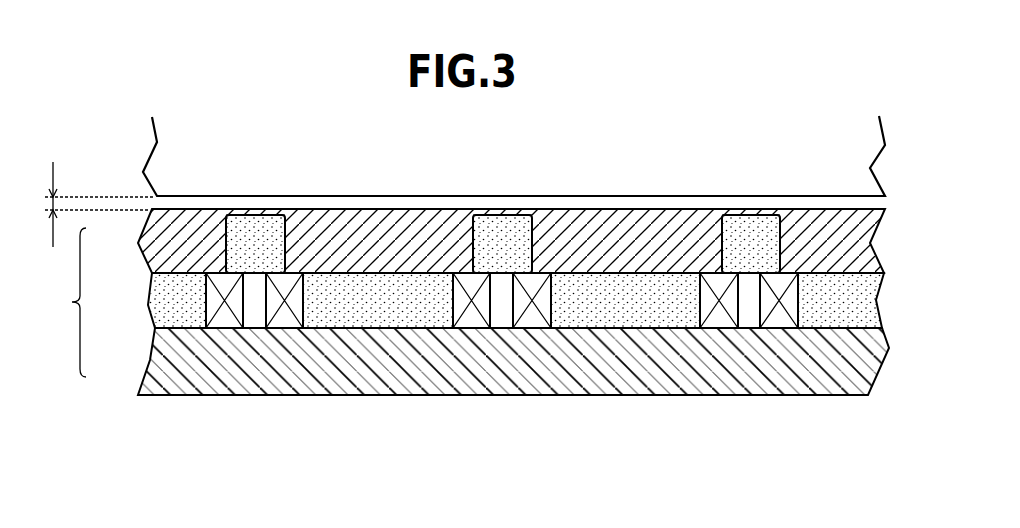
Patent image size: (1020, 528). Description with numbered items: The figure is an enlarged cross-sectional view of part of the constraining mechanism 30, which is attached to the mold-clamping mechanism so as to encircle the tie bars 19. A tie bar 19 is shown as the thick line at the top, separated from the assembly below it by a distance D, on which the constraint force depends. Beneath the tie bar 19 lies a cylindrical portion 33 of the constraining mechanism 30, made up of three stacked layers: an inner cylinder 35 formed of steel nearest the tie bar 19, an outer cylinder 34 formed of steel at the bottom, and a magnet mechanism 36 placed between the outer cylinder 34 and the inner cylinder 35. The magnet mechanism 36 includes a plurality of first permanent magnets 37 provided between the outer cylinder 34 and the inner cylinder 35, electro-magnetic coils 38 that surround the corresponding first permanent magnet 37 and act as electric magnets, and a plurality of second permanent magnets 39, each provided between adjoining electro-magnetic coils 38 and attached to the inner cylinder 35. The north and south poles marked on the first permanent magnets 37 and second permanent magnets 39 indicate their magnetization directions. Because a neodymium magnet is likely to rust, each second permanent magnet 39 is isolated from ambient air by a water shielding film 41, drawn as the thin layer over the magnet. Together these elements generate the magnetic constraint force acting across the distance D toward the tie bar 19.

The tie bar 19 is at (160, 162).
The constraining mechanism 30 is at (360, 406).
The cylindrical portion 33 is at (60, 302).
The outer cylinder 34 is at (176, 354).
The inner cylinder 35 is at (173, 249).
The magnet mechanism 36 is at (148, 298).
The first permanent magnet 37 is at (190, 318).
The electro-magnetic coil 38 is at (285, 320).
The second permanent magnet 39 is at (267, 212).
The water shielding film 41 is at (249, 212).
The distance D is at (100, 189).